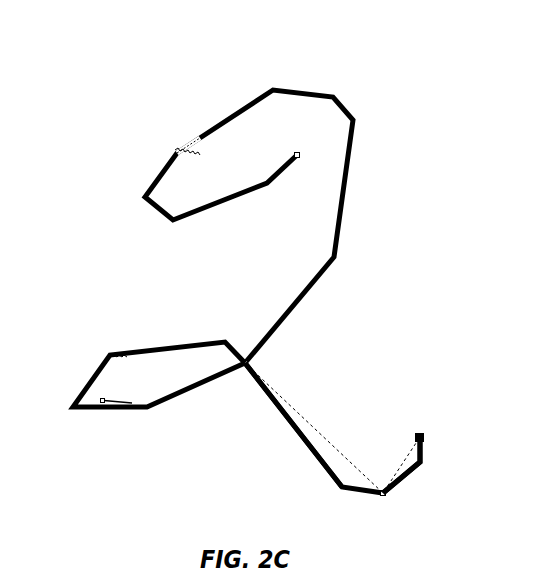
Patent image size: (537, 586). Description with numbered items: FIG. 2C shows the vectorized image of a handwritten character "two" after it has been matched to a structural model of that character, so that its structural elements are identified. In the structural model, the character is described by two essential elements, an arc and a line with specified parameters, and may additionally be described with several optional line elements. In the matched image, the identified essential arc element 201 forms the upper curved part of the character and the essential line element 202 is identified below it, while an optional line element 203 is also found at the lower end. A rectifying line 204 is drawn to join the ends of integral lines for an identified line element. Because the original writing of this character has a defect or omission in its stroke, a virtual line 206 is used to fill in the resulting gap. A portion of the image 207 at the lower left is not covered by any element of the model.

The essential arc element 201 is at (340, 92).
The essential line element 202 is at (328, 458).
The optional line element 203 is at (425, 457).
The rectifying line 204 is at (313, 415).
The virtual line 206 is at (182, 137).
The portion of image not covered by elements 207 is at (110, 392).